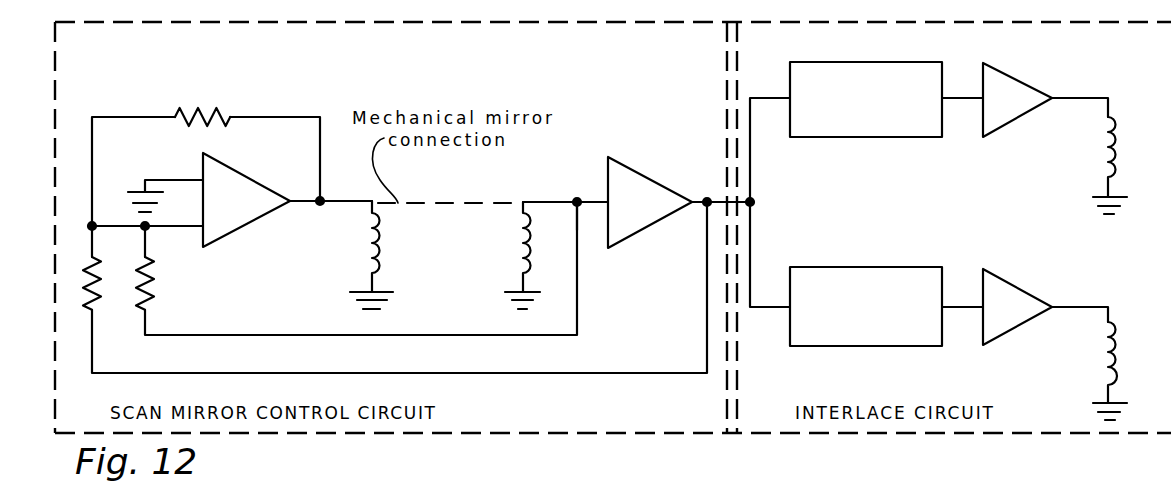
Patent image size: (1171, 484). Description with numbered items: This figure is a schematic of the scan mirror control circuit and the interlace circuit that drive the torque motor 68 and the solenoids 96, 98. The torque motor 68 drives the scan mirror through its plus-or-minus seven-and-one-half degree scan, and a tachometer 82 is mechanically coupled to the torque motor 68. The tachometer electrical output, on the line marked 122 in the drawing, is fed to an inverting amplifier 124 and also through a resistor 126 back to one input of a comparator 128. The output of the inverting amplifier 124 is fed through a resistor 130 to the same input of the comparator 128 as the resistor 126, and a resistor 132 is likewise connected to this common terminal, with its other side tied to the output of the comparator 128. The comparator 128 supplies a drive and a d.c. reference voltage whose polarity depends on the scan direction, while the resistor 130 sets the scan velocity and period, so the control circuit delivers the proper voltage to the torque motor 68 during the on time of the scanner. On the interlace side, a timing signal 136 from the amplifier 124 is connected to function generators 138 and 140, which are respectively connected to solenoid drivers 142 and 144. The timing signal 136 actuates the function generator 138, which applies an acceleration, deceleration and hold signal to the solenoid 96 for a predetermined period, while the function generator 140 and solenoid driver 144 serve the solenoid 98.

The resistor 132 is at (214, 108).
The comparator 128 is at (248, 172).
The resistor 130 is at (88, 292).
The resistor 126 is at (153, 281).
The torque motor 68 is at (372, 251).
The tachometer 82 is at (522, 243).
The tachometer output line 122 is at (584, 215).
The inverting amplifier 124 is at (633, 176).
The timing signal 136 is at (700, 195).
The function generator 138 is at (838, 127).
The function generator 140 is at (898, 267).
The solenoid driver 142 is at (1020, 98).
The solenoid 96 is at (1108, 170).
The solenoid driver 144 is at (1010, 296).
The solenoid 98 is at (1108, 373).